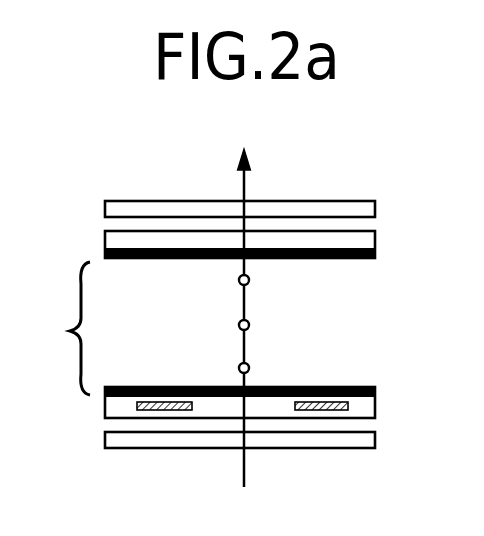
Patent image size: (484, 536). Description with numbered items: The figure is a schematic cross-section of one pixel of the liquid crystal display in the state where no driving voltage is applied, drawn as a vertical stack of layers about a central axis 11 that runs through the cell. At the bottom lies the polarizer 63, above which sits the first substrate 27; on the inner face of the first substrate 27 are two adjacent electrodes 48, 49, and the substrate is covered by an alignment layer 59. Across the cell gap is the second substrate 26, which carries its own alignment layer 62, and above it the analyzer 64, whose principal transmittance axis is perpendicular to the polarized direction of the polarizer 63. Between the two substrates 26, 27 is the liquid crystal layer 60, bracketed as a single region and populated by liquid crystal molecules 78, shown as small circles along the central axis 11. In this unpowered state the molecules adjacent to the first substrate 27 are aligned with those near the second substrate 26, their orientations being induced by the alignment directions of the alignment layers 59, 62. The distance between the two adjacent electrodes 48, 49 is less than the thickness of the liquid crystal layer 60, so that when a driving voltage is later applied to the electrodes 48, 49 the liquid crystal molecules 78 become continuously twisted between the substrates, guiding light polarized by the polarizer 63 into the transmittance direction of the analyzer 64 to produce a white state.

The optical axis / normal direction 11 is at (244, 186).
The analyzer 64 is at (368, 208).
The second substrate 26 is at (278, 276).
The alignment layer 62 is at (134, 259).
The liquid crystal molecules 78 is at (250, 283).
The liquid crystal layer 60 is at (56, 328).
The first substrate 27 is at (284, 375).
The electrode 48 is at (168, 391).
The electrode 49 is at (350, 392).
The alignment layer 59 is at (336, 392).
The polarizer 63 is at (366, 436).